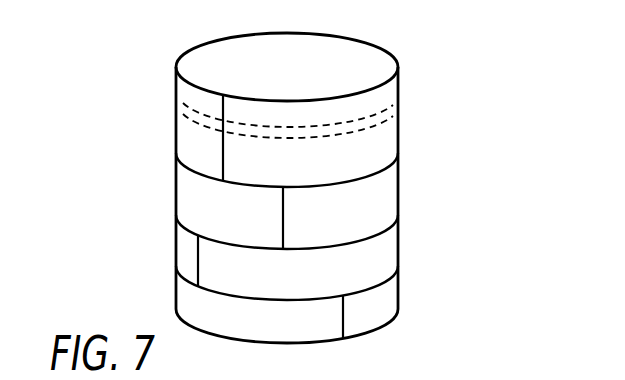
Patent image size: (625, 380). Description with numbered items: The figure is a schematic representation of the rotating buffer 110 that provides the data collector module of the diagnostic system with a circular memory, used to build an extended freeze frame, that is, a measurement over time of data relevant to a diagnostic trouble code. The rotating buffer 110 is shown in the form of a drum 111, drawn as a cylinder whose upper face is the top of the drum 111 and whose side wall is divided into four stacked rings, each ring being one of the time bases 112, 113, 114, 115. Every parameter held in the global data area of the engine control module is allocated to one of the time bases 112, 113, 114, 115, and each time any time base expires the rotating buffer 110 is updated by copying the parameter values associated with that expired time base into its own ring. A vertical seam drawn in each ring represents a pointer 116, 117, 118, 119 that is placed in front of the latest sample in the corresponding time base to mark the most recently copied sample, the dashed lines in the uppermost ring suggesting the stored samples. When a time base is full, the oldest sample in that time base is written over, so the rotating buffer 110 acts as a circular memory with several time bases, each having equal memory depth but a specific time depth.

The rotating buffer 110 is at (166, 38).
The drum 111 is at (362, 62).
The first time base 112 is at (385, 140).
The second time base 113 is at (385, 200).
The third time base 114 is at (388, 250).
The fourth time base 115 is at (387, 300).
The pointer 116 is at (221, 108).
The pointer 117 is at (283, 222).
The pointer 118 is at (199, 261).
The pointer 119 is at (343, 312).